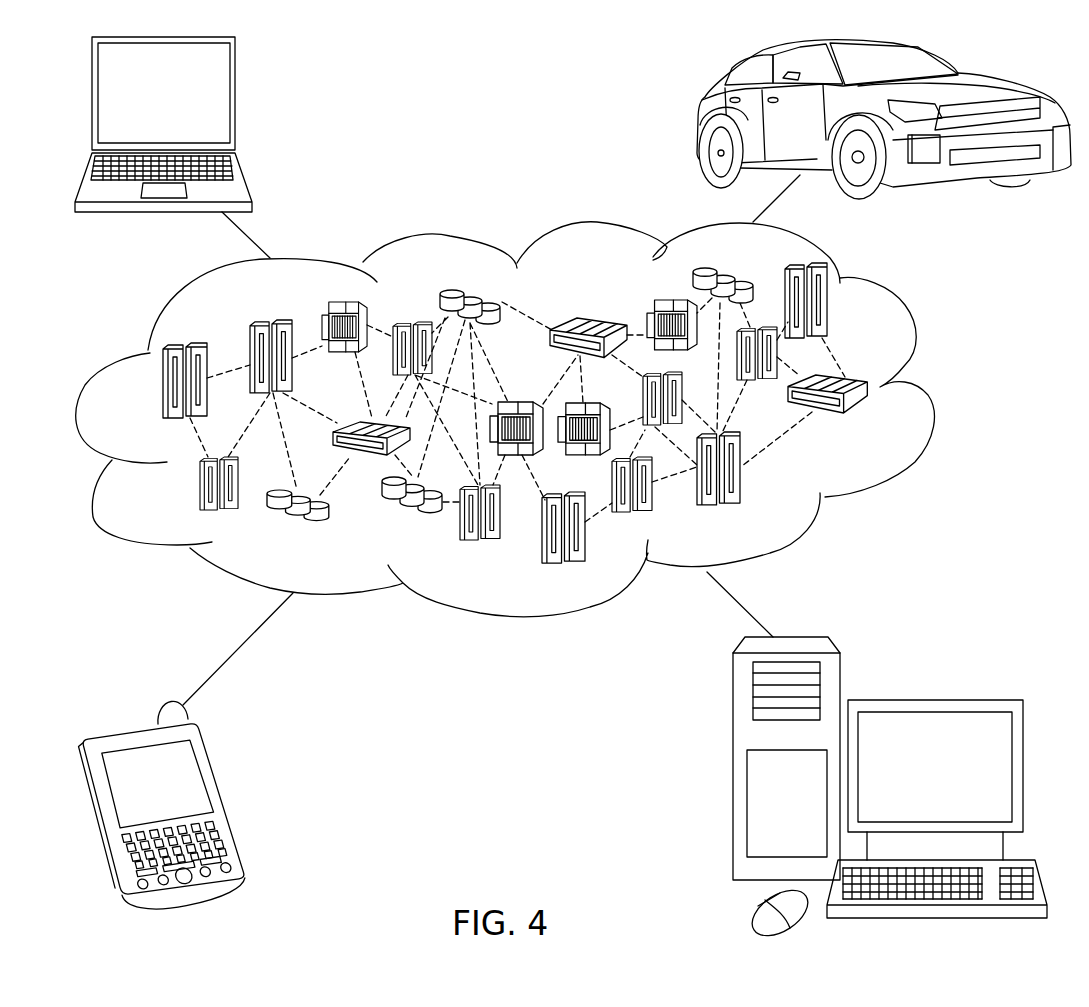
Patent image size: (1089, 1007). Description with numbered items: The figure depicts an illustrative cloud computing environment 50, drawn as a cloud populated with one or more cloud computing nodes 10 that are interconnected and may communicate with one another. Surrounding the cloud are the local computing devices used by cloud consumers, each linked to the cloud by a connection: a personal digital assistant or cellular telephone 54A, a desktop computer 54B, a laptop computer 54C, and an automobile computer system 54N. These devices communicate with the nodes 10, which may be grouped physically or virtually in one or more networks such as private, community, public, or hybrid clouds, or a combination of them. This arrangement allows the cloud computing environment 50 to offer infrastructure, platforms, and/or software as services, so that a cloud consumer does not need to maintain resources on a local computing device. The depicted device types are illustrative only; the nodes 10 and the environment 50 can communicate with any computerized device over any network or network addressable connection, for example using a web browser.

The cloud computing nodes 10 is at (877, 428).
The cloud computing environment 50 is at (932, 393).
The personal digital assistant (PDA) or cellular telephone 54A is at (225, 798).
The desktop computer 54B is at (932, 698).
The laptop computer 54C is at (235, 102).
The automobile computer system 54N is at (698, 118).